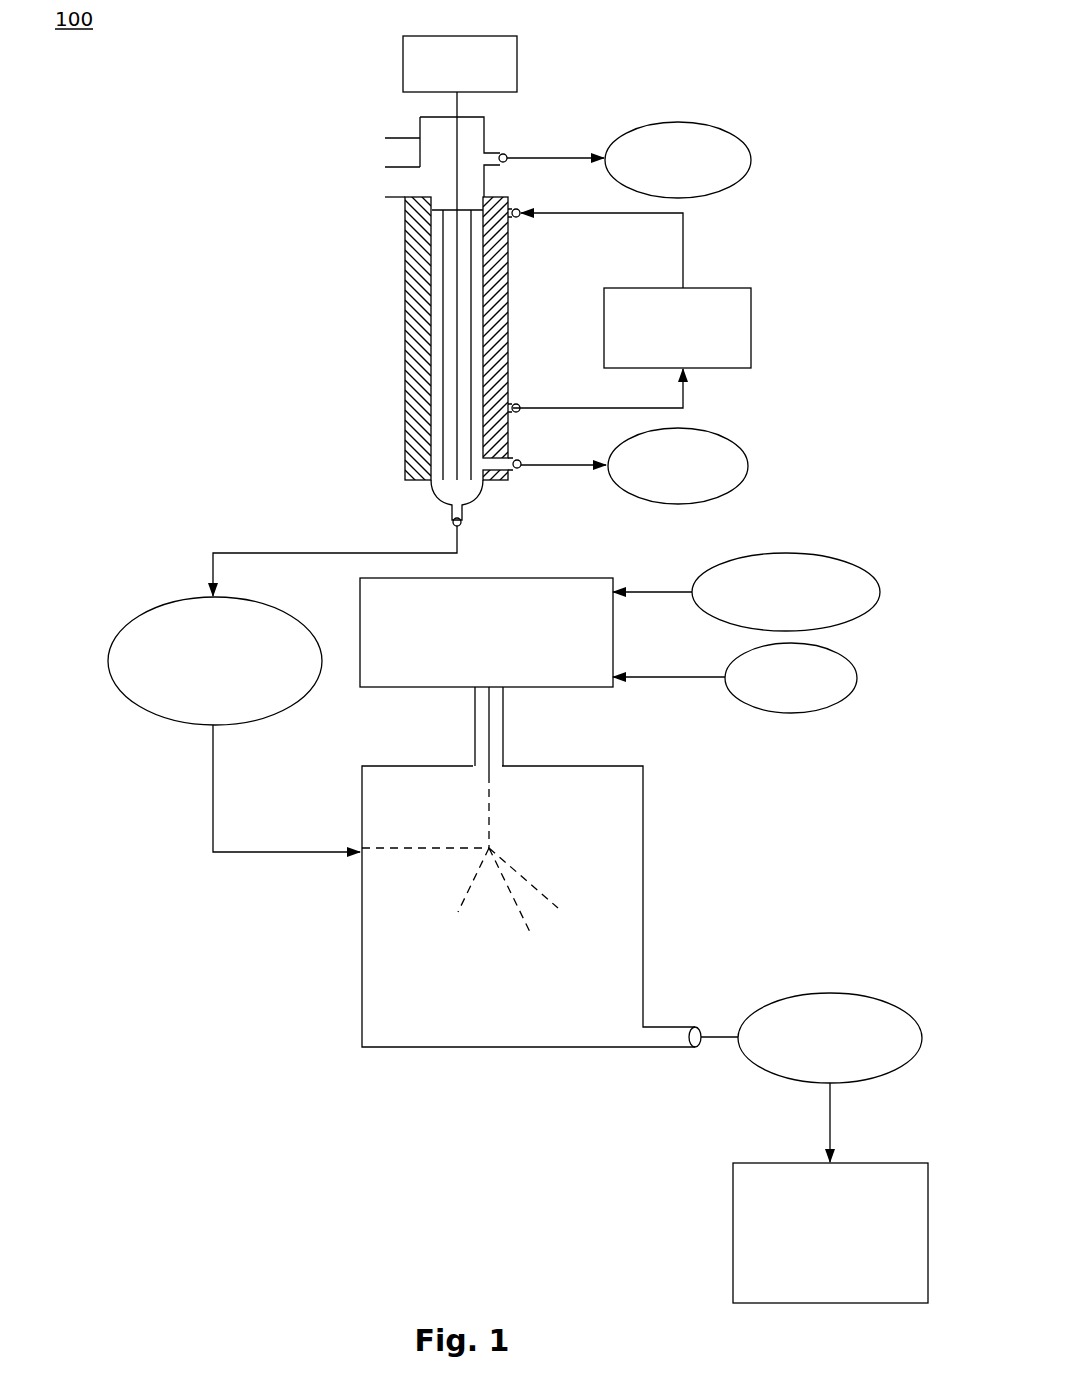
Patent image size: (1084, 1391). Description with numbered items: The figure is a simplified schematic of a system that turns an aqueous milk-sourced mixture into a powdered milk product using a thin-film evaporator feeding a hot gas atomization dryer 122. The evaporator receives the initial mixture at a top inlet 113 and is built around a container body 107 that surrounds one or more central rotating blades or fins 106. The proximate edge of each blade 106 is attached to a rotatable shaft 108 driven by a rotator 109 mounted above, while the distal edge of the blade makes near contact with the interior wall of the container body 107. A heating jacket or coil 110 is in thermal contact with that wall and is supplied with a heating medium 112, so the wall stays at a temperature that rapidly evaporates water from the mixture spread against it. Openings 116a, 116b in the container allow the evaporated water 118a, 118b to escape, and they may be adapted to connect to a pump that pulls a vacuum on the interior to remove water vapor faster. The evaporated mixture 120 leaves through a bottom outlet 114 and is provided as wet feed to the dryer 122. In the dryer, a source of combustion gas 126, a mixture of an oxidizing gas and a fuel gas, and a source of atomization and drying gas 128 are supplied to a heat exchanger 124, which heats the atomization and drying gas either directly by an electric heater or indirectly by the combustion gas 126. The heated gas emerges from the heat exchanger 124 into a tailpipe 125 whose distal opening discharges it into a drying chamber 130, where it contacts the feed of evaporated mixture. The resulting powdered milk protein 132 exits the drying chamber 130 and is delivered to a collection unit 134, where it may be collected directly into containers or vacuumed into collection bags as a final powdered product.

The central rotating blades or fins 106 is at (467, 209).
The container body 107 is at (484, 132).
The rotatable shaft 108 is at (455, 148).
The rotator 109 is at (517, 56).
The heating jacket or coil 110 is at (508, 281).
The heating medium 112 is at (751, 310).
The top inlet 113 is at (394, 200).
The bottom outlet 114 is at (462, 524).
The opening 116a is at (506, 153).
The opening 116b is at (521, 460).
The evaporated water 118a is at (751, 160).
The evaporated water 118b is at (747, 452).
The evaporated mixture 120 is at (110, 642).
The hot gas atomization dryer 122 is at (730, 836).
The heat exchanger 124 is at (573, 578).
The tailpipe 125 is at (503, 736).
The combustion gas 126 is at (880, 575).
The atomization and drying gas 128 is at (857, 668).
The drying chamber 130 is at (643, 937).
The powdered milk protein 132 is at (830, 993).
The collection unit 134 is at (733, 1238).